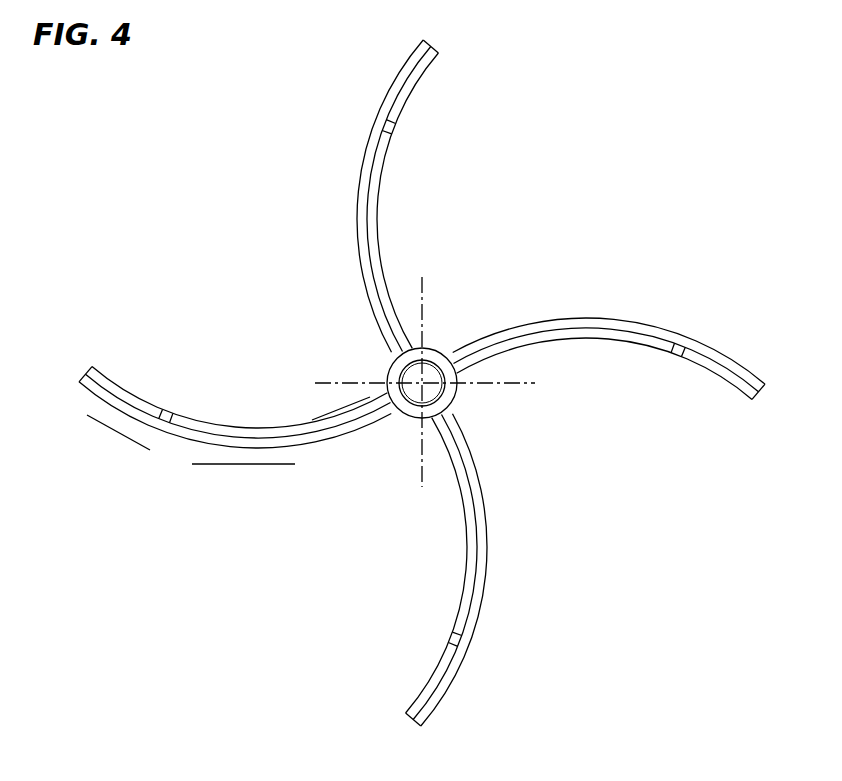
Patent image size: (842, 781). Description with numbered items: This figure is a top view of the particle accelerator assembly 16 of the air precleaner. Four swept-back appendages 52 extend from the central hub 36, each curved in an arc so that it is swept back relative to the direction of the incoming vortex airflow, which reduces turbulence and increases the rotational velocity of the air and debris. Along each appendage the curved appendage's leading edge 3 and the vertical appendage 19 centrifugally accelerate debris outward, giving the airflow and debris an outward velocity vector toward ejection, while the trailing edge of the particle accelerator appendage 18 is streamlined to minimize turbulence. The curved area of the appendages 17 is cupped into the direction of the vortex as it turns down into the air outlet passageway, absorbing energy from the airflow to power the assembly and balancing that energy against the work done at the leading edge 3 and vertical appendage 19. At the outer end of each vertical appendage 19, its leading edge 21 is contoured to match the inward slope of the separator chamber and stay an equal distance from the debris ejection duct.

The curved appendage's leading edge 3 is at (243, 466).
The particle accelerator assembly 16 is at (429, 346).
The curved area of the appendages 17 is at (331, 411).
The trailing edge of the particle accelerator appendage 18 is at (648, 323).
The vertical appendage 19 is at (108, 429).
The leading edge of the vertical appendage 21 is at (438, 46).
The central hub 36 is at (453, 396).
The swept-back appendage 52 is at (465, 553).